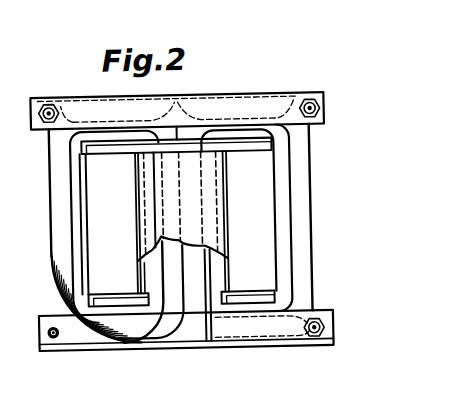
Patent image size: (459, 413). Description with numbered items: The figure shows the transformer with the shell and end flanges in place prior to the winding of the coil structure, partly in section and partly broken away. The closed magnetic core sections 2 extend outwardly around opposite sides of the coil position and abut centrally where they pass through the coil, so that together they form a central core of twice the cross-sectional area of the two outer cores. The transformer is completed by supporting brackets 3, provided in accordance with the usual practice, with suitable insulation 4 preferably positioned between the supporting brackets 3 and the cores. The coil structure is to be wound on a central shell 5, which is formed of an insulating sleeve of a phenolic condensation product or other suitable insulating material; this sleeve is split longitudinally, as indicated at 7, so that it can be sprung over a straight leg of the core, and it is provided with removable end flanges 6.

The core sections 2 is at (48, 235).
The supporting brackets 3 is at (257, 95).
The insulation 4 is at (211, 316).
The central shell 5 is at (231, 219).
The removable end flanges 6 is at (253, 152).
The split 7 is at (155, 202).